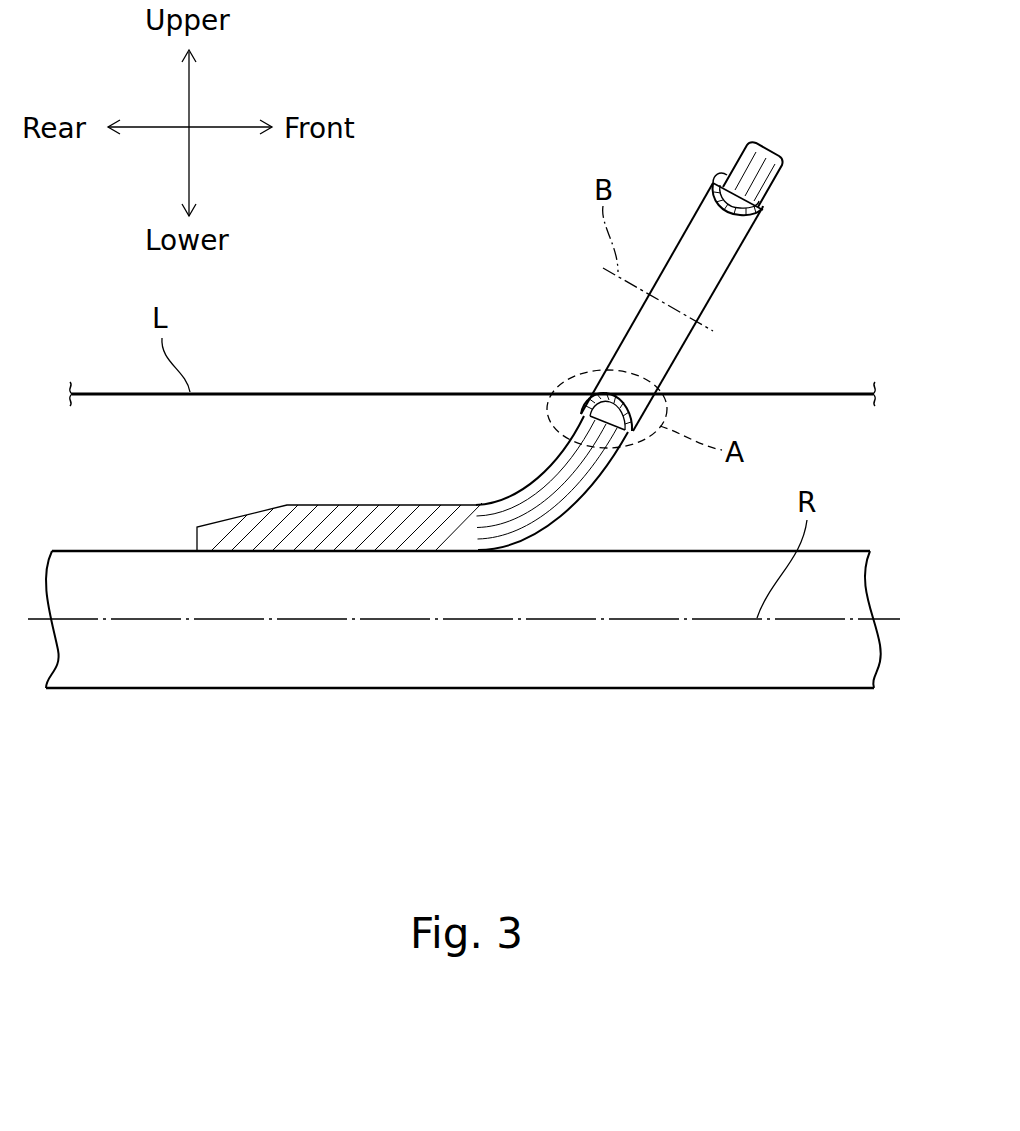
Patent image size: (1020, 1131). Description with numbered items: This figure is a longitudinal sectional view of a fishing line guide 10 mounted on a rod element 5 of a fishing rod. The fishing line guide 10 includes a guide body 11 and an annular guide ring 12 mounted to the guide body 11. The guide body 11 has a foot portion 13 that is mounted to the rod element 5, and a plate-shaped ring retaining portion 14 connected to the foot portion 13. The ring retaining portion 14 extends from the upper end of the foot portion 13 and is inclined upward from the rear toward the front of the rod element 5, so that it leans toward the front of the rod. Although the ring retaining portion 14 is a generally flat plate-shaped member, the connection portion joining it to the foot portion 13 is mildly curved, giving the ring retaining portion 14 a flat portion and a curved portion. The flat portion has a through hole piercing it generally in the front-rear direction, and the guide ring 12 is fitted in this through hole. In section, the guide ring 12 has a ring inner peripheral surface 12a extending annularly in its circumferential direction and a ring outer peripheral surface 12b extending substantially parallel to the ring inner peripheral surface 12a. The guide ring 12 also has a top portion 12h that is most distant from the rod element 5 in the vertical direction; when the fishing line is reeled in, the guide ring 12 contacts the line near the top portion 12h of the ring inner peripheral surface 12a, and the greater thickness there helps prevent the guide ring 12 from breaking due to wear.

The rod element 5 is at (383, 672).
The fishing line guide 10 is at (526, 192).
The guide body 11 is at (457, 481).
The guide ring 12 is at (664, 286).
The ring inner peripheral surface 12a is at (633, 410).
The ring outer peripheral surface 12b is at (558, 367).
The top portion 12h is at (579, 349).
The foot portion 13 is at (362, 506).
The ring retaining portion 14 is at (592, 478).